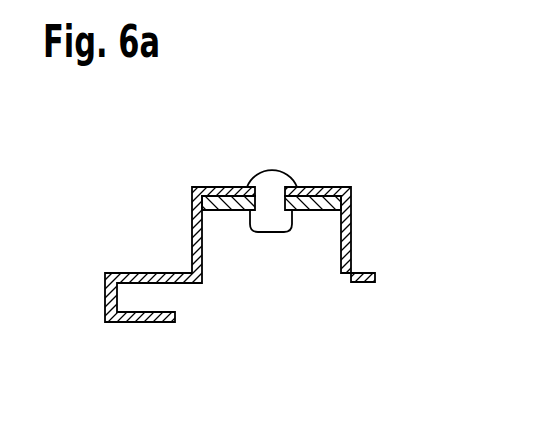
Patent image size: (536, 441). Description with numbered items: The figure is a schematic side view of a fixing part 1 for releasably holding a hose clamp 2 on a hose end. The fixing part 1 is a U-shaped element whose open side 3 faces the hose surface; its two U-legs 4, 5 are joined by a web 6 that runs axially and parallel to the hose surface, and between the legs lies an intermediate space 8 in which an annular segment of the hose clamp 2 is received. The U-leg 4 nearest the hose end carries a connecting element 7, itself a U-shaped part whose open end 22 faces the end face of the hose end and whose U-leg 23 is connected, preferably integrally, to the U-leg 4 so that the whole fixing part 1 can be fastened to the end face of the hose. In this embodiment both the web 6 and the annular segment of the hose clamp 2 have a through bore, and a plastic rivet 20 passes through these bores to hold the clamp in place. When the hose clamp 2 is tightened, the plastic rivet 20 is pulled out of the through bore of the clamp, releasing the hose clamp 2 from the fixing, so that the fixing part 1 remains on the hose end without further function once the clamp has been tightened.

The fixing part 1 is at (260, 264).
The hose clamp 2 is at (323, 186).
The open side 3 is at (260, 252).
The U-leg 4 is at (260, 264).
The U-leg 5 is at (260, 264).
The web 6 is at (217, 187).
The connecting element 7 is at (260, 264).
The intermediate space 8 is at (260, 233).
The plastic rivet 20 is at (273, 182).
The open end 22 is at (260, 264).
The U-leg 23 is at (260, 264).